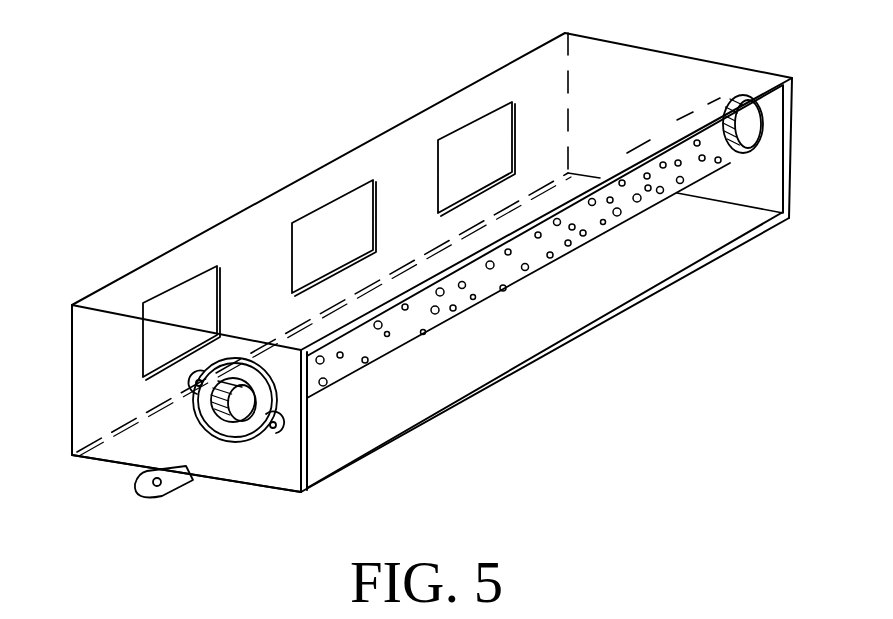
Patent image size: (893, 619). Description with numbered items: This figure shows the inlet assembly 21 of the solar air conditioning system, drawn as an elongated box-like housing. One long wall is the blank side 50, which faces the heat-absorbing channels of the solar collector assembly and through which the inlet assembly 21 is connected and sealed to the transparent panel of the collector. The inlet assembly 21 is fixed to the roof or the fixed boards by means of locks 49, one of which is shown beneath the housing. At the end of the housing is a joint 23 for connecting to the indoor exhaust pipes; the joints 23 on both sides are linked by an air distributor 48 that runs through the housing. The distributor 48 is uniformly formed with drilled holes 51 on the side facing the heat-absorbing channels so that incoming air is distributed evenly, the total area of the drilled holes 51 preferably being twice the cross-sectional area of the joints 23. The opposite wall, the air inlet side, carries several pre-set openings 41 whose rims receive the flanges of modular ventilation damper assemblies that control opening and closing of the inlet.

The inlet assembly 21 is at (100, 290).
The pre-set openings 41 is at (335, 213).
The joints 23 is at (231, 428).
The air distributor 48 is at (460, 313).
The drilled holes 51 is at (568, 246).
The blank side 50 is at (695, 222).
The locks 49 is at (173, 490).